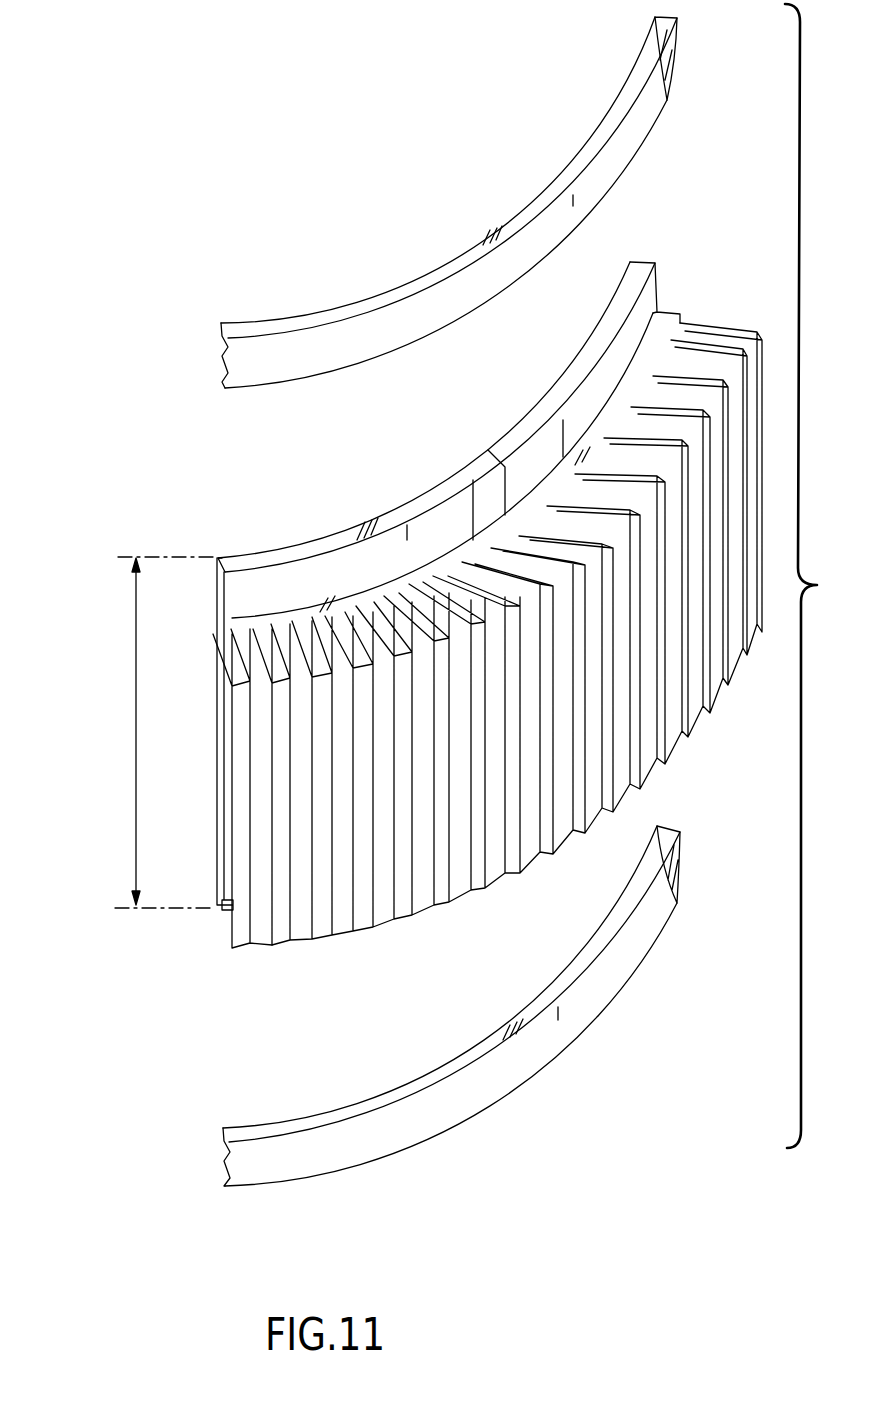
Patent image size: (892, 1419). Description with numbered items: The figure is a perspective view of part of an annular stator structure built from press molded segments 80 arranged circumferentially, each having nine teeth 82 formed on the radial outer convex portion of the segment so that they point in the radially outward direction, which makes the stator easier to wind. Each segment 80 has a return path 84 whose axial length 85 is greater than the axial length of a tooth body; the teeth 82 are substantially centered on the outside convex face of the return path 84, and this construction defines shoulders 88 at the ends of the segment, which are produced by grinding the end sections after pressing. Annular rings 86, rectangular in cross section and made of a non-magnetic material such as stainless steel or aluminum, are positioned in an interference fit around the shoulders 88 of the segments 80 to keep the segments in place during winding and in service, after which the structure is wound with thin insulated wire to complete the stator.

The press molded segment 80 is at (296, 543).
The teeth 82 is at (255, 920).
The return path 84 is at (220, 650).
The axial length 85 is at (133, 692).
The annular rings 86 is at (258, 298).
The shoulders 88 is at (657, 297).